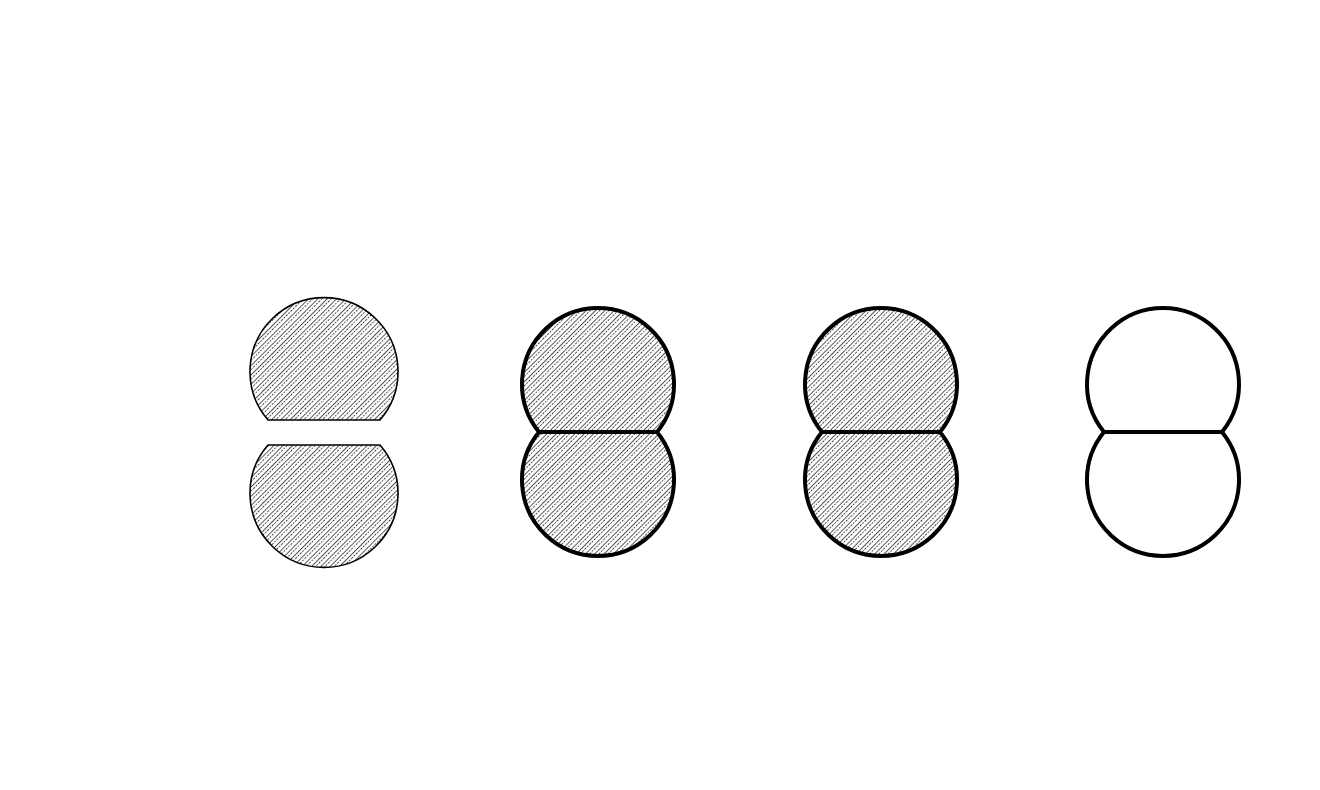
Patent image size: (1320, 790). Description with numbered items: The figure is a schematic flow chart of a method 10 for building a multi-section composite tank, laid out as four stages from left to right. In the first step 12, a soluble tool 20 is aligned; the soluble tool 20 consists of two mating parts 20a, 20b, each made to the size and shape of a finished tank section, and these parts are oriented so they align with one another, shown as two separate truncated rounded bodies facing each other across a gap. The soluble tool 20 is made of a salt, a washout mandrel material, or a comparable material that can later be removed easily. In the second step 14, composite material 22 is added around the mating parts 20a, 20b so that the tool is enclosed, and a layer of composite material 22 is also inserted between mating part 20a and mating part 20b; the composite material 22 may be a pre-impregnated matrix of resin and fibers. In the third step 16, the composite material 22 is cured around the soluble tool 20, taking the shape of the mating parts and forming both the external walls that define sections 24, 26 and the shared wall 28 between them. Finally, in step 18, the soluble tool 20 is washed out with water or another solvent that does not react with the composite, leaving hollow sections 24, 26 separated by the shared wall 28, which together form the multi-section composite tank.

The method 10 is at (255, 126).
The step 12 is at (334, 226).
The step 14 is at (609, 226).
The step 16 is at (887, 226).
The step 18 is at (1174, 226).
The soluble tool 20 is at (226, 425).
The mating part 20a is at (250, 361).
The mating part 20b is at (250, 511).
The composite material 22 is at (525, 361).
The section 24 is at (1175, 387).
The section 26 is at (1175, 502).
The shared wall 28 is at (1124, 427).